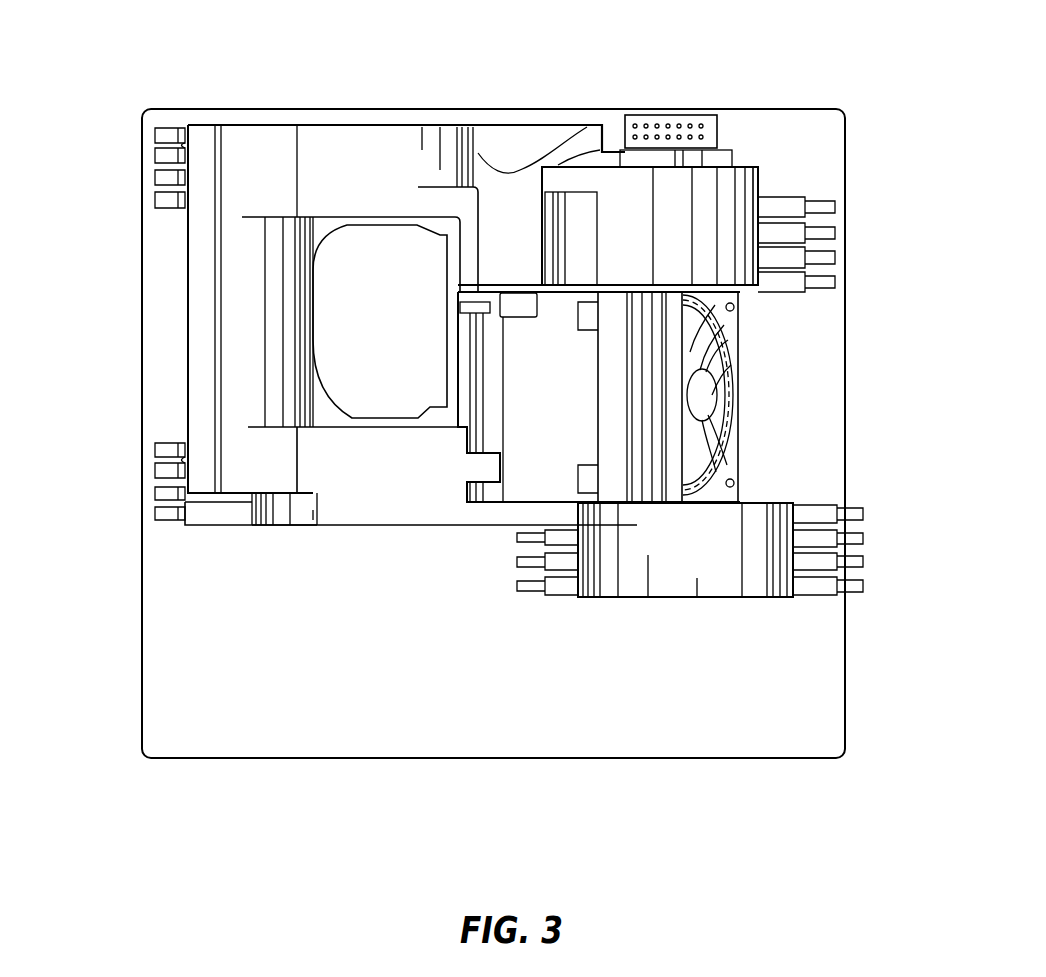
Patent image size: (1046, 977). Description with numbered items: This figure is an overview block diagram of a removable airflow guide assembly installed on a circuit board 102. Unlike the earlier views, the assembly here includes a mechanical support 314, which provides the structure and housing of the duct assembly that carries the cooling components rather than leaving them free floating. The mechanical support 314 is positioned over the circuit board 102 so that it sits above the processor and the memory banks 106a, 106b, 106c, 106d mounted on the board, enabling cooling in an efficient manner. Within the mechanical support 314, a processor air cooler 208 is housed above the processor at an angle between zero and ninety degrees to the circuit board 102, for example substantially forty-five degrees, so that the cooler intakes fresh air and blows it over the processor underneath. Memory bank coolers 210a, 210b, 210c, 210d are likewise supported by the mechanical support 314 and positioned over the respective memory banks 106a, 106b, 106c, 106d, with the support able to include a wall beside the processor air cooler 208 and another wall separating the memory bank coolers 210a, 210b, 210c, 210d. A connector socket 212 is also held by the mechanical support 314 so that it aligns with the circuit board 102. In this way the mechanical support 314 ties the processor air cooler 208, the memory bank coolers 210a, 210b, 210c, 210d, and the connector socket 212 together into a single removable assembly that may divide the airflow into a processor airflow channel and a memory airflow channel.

The circuit board 102 is at (810, 128).
The mechanical support 314 is at (255, 125).
The memory bank cooler 210d is at (335, 183).
The memory bank 106d is at (158, 157).
The memory bank 106c is at (158, 470).
The memory bank cooler 210c is at (378, 490).
The processor air cooler 208 is at (710, 415).
The memory bank cooler 210a is at (727, 263).
The connector socket 212 is at (683, 115).
The memory bank 106a is at (825, 232).
The memory bank cooler 210b is at (675, 587).
The memory bank 106b is at (823, 510).